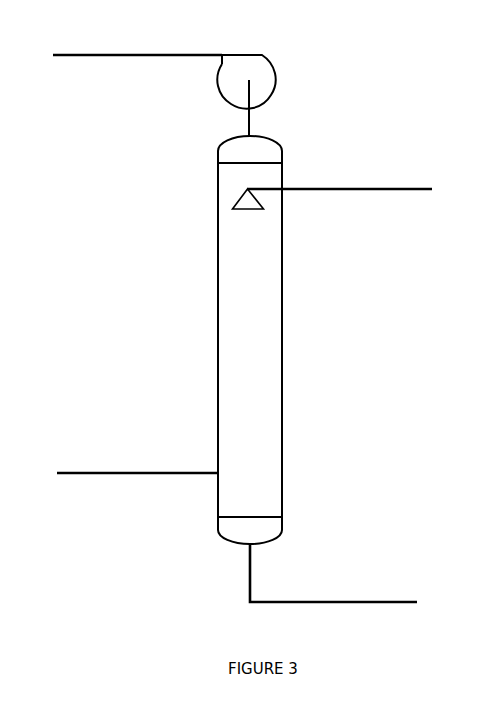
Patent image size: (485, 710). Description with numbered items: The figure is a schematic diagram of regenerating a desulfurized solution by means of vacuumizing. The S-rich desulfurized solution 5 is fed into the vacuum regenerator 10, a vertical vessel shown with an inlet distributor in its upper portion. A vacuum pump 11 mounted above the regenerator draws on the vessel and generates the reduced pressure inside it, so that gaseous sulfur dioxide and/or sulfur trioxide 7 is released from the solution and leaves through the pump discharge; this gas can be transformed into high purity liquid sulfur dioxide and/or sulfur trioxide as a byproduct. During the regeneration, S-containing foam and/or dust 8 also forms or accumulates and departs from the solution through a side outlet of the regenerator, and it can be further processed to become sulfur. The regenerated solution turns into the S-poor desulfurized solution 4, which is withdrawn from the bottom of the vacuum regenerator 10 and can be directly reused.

The S-poor desulfurized solution 4 is at (362, 588).
The S-rich desulfurized solution 5 is at (367, 179).
The sulfur dioxide and/or sulfur trioxide 7 is at (92, 47).
The S-containing foam and/or dust 8 is at (94, 459).
The vacuum regenerator 10 is at (235, 269).
The vacuum pump 11 is at (262, 77).